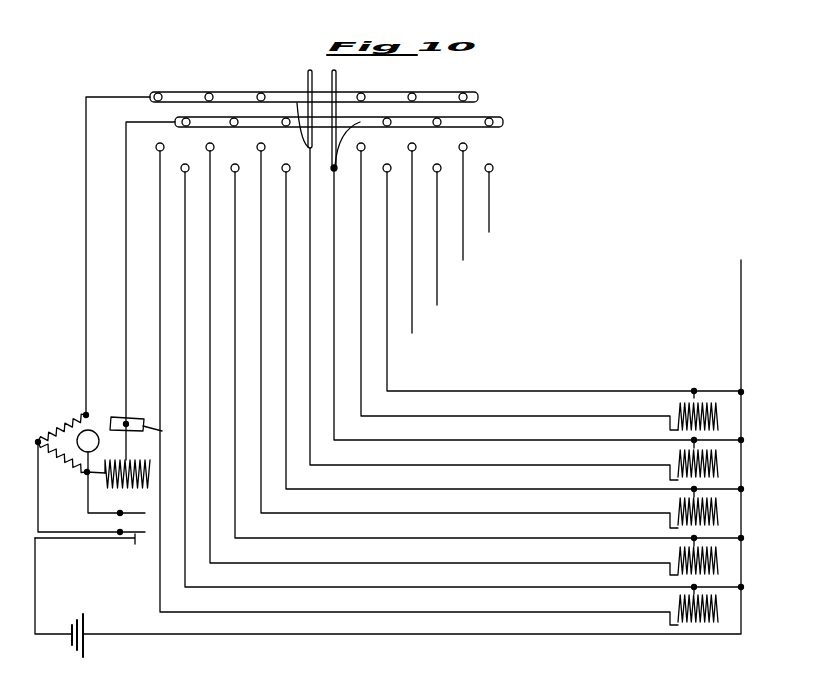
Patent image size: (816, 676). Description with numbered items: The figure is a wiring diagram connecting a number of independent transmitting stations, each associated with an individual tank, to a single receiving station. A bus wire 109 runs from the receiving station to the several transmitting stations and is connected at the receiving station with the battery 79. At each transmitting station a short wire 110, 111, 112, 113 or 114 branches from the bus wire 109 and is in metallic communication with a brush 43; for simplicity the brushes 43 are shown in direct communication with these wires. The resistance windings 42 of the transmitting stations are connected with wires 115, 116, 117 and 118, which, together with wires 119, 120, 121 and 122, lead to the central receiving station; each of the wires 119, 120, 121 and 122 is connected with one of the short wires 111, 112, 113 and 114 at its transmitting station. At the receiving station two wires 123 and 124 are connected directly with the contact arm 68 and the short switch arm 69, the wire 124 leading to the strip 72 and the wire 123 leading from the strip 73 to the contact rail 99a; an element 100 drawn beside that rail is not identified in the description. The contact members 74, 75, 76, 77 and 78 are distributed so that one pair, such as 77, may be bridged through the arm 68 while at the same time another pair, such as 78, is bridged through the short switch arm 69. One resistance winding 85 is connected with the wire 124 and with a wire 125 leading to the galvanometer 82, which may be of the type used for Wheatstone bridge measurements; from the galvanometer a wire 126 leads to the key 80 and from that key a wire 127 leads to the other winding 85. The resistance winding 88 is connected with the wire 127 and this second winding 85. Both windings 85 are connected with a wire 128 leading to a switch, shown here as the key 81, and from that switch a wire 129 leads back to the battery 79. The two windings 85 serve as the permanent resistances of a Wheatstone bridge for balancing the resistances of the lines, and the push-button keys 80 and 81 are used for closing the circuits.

The contact strip 72 is at (155, 92).
The contact strip 73 is at (176, 120).
The short switch arm 69 is at (308, 77).
The contact arm 68 is at (337, 83).
The contact member 78 is at (298, 112).
The contact member 77 is at (345, 120).
The contact member 76 is at (359, 153).
The contact member 75 is at (386, 173).
The contact member 74 is at (411, 153).
The wire 124 is at (86, 237).
The wire 123 is at (126, 305).
The wire 125 is at (88, 414).
The contact rail 99a is at (132, 417).
The resistance coil 85 is at (63, 444).
The galvanometer 82 is at (99, 441).
The wire 126 is at (94, 460).
The conductor 100 is at (165, 431).
The resistance winding 88 is at (128, 465).
The wire 128 is at (37, 494).
The wire 127 is at (86, 493).
The key 80 is at (125, 518).
The key 81 is at (135, 546).
The wire 129 is at (36, 575).
The battery 79 is at (85, 628).
The bus wire 109 is at (452, 636).
The wire 122 is at (560, 386).
The wire 114 is at (697, 391).
The wire 118 is at (505, 416).
The wire 113 is at (715, 441).
The wire 121 is at (545, 438).
The wire 117 is at (490, 466).
The brush 43 is at (692, 443).
The resistance winding 42 is at (680, 495).
The wire 112 is at (720, 488).
The wire 120 is at (500, 489).
The wire 116 is at (456, 514).
The wire 111 is at (728, 537).
The wire 119 is at (480, 538).
The wire 115 is at (435, 563).
The wire 110 is at (728, 584).